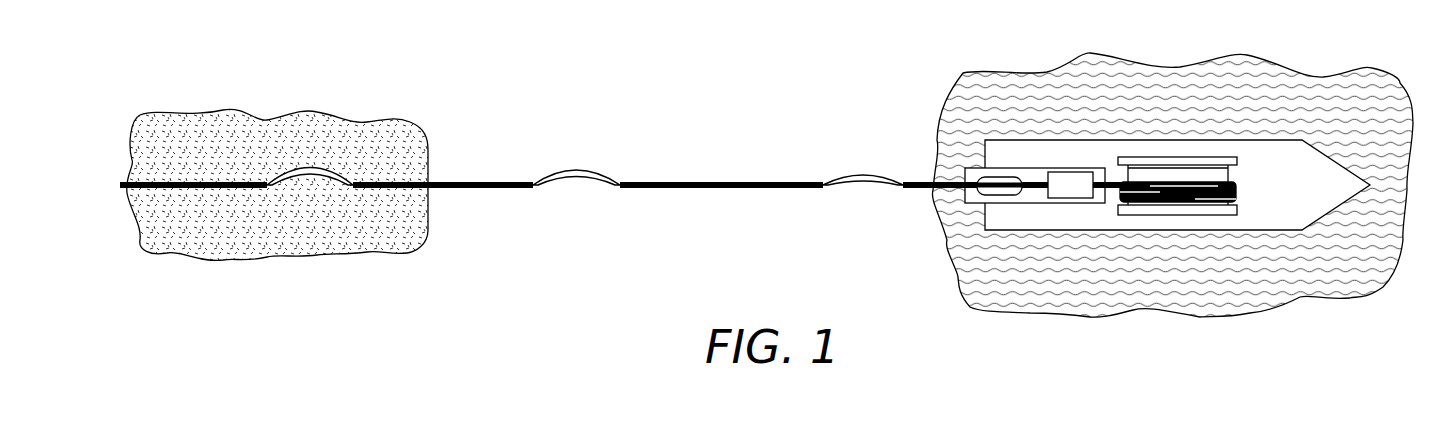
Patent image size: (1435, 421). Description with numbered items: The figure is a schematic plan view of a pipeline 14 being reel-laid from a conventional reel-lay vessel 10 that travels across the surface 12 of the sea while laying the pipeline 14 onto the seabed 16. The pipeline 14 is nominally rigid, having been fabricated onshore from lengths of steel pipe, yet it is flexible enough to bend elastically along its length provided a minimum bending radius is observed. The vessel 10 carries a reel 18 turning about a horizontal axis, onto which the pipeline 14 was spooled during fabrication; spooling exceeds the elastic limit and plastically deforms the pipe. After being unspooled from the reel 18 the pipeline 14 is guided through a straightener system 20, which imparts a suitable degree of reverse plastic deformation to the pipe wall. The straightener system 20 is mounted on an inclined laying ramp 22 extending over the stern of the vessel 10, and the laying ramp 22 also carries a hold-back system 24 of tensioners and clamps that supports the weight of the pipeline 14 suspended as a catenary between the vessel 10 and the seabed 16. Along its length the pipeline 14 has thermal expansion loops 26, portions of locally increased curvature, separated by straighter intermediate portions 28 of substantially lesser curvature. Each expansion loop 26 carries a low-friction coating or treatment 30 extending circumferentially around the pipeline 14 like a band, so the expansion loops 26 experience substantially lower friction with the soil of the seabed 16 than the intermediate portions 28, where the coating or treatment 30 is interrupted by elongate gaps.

The reel-lay vessel 10 is at (1290, 222).
The surface of the sea 12 is at (1243, 65).
The pipeline 14 is at (679, 118).
The seabed 16 is at (397, 132).
The reel 18 is at (1142, 212).
The straightener system 20 is at (1070, 172).
The laying ramp 22 is at (976, 200).
The hold-back system 24 is at (1002, 177).
The thermal expansion loops 26 is at (313, 206).
The intermediate portions 28 is at (190, 183).
The low-friction coating or treatment 30 is at (310, 168).